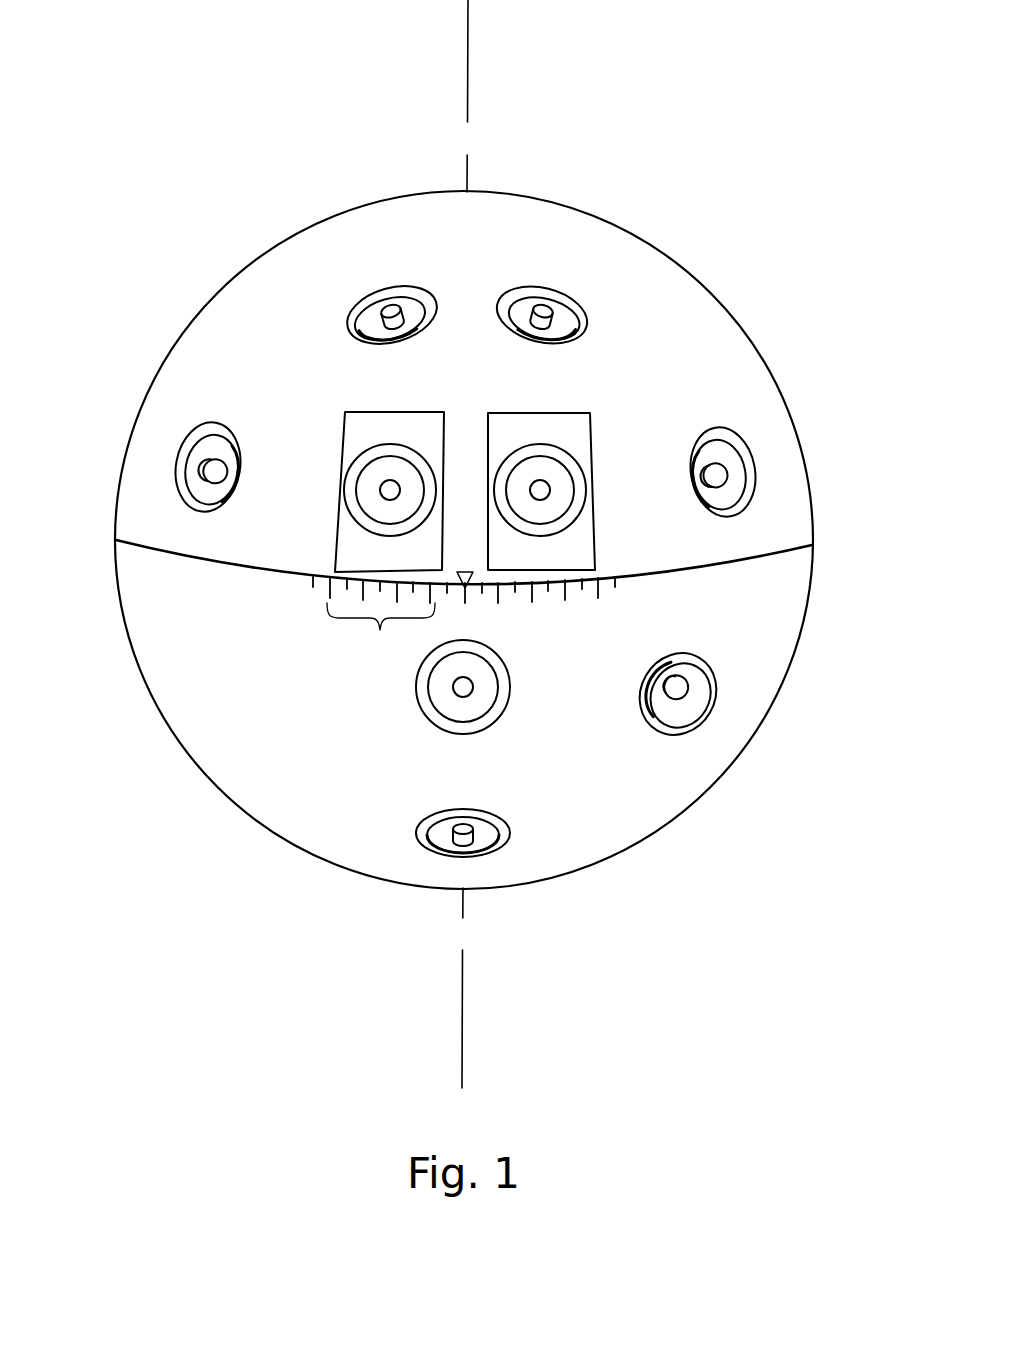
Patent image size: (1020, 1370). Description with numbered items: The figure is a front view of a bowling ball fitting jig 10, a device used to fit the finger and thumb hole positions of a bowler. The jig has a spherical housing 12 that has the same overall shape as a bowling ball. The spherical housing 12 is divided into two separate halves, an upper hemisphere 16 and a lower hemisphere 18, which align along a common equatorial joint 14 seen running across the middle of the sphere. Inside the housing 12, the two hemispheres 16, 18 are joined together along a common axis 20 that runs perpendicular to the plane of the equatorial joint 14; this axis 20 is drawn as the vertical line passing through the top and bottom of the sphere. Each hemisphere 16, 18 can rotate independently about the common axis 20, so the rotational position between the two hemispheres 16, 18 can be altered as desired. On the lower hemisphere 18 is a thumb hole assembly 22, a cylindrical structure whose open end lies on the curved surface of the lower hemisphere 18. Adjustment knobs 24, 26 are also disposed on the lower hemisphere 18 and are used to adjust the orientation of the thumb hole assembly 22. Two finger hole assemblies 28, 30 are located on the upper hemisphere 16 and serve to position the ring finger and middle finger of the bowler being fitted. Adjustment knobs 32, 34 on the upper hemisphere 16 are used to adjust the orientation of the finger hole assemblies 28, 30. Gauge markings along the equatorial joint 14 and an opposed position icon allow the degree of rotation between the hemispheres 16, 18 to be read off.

The bowling ball fitting jig 10 is at (712, 234).
The spherical housing 12 is at (763, 354).
The equatorial joint 14 is at (780, 560).
The upper hemisphere 16 is at (773, 420).
The lower hemisphere 18 is at (785, 607).
The common axis 20 is at (468, 100).
The thumb hole assembly 22 is at (427, 713).
The adjustment knob 24 is at (448, 830).
The adjustment knob 26 is at (675, 713).
The finger hole assembly 28 is at (365, 458).
The finger hole assembly 30 is at (565, 462).
The adjustment knob 32 is at (420, 300).
The adjustment knob 34 is at (197, 463).